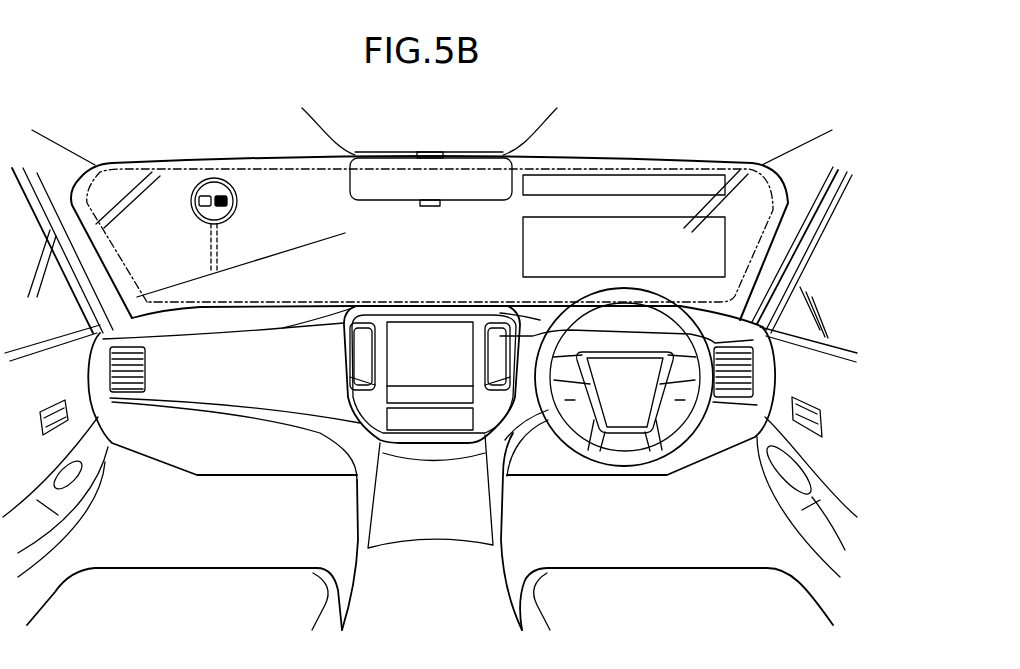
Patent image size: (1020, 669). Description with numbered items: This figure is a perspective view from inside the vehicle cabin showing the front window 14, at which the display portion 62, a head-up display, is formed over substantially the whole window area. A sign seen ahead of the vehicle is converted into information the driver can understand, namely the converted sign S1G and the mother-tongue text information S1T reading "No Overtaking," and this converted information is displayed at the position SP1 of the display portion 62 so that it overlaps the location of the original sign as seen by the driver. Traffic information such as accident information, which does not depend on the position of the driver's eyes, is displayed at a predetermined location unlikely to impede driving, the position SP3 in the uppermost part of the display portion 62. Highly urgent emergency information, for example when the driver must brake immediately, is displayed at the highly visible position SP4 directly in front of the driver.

The front window 14 is at (695, 163).
The display portion 62 is at (270, 167).
The position SP1 is at (176, 182).
The sign S1G is at (230, 180).
The text information S1T is at (247, 249).
The position SP3 is at (652, 176).
The position SP4 is at (725, 247).